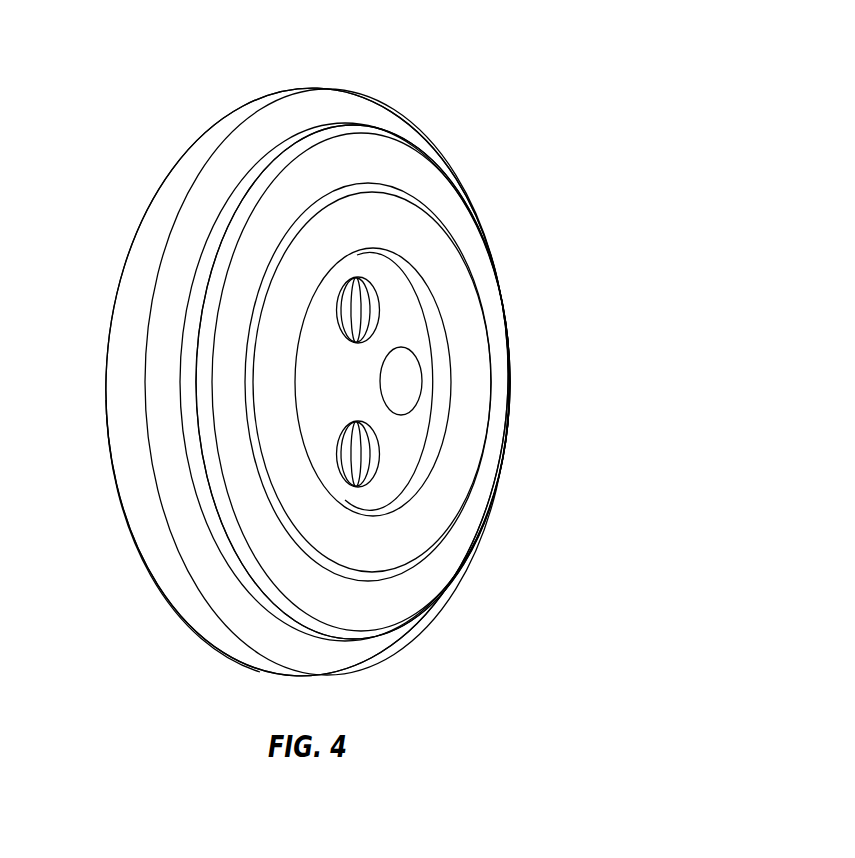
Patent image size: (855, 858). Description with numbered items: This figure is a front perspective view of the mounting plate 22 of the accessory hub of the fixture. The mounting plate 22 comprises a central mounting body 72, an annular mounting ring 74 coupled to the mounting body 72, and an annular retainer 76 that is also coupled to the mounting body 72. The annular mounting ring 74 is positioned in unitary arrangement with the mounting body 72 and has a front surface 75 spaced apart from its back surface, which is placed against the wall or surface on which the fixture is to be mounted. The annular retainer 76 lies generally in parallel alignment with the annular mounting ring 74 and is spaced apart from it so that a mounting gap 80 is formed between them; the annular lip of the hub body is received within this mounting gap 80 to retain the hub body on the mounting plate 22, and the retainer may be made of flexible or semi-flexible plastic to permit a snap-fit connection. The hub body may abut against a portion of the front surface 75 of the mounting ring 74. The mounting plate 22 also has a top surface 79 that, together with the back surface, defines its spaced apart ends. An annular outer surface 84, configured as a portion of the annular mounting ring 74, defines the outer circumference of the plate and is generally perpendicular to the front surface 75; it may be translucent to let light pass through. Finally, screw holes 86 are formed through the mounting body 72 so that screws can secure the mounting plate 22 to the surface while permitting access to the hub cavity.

The mounting plate 22 is at (403, 60).
The mounting body 72 is at (400, 462).
The annular mounting ring 74 is at (120, 363).
The front surface 75 is at (163, 430).
The annular retainer 76 is at (222, 258).
The top surface 79 is at (382, 550).
The mounting gap 80 is at (255, 163).
The annular outer surface 84 is at (147, 537).
The screw holes 86 is at (380, 328).